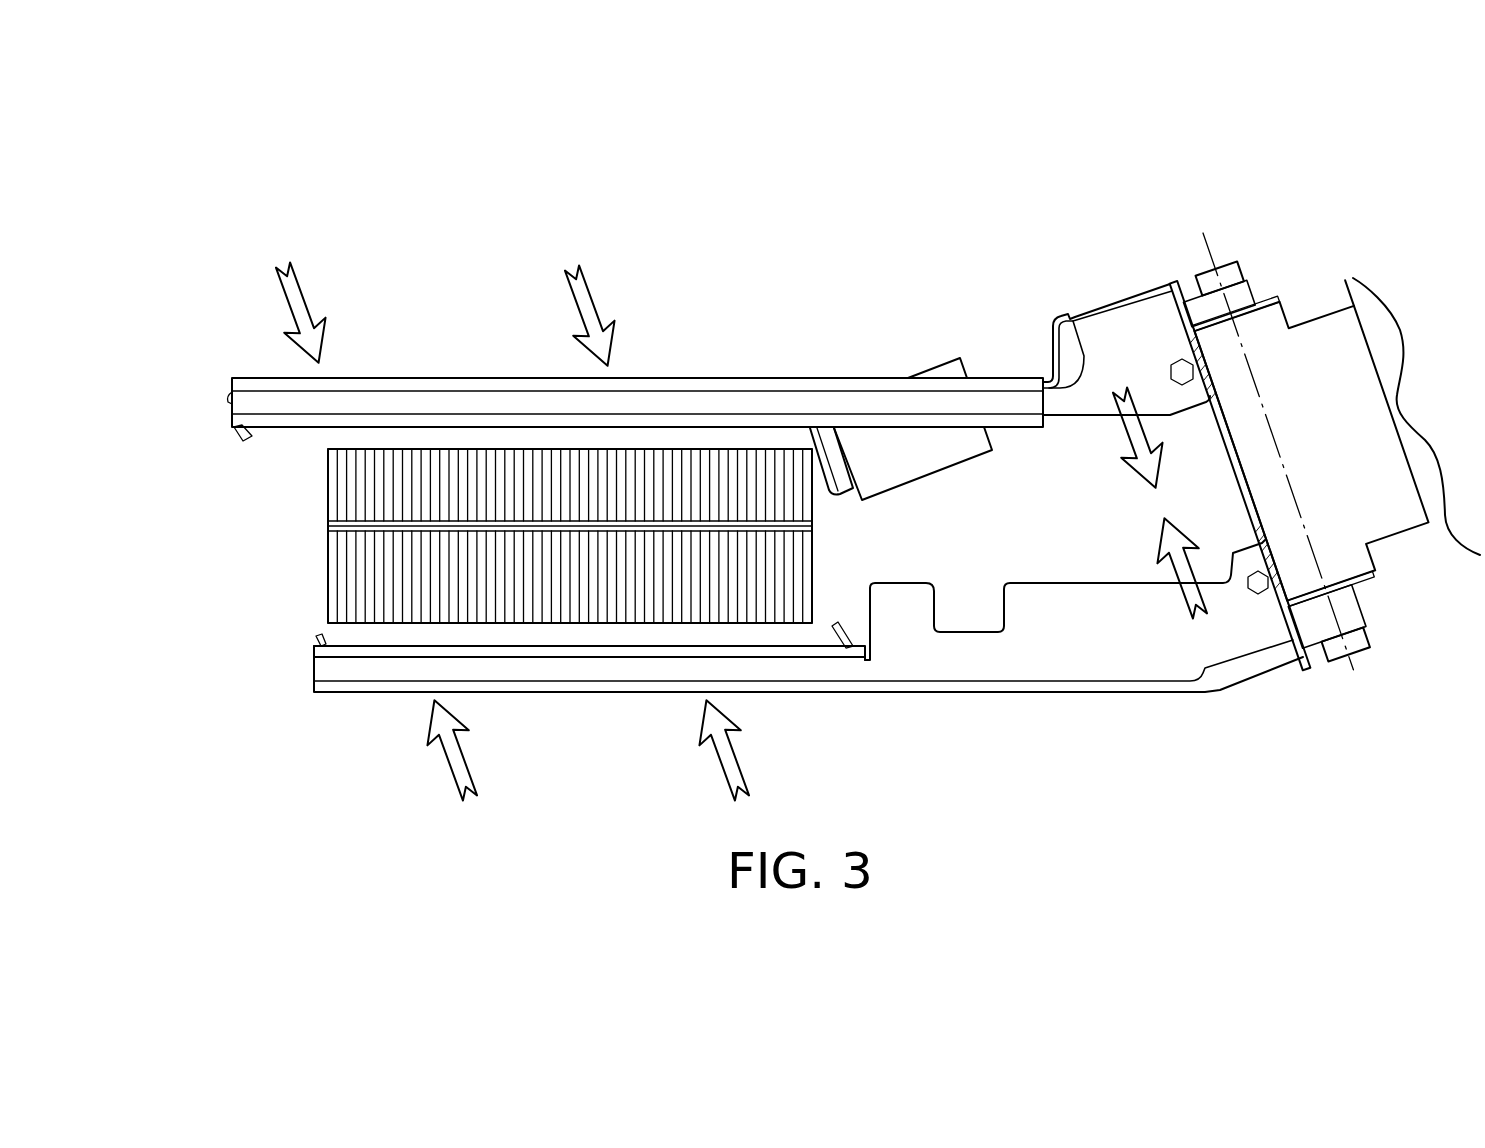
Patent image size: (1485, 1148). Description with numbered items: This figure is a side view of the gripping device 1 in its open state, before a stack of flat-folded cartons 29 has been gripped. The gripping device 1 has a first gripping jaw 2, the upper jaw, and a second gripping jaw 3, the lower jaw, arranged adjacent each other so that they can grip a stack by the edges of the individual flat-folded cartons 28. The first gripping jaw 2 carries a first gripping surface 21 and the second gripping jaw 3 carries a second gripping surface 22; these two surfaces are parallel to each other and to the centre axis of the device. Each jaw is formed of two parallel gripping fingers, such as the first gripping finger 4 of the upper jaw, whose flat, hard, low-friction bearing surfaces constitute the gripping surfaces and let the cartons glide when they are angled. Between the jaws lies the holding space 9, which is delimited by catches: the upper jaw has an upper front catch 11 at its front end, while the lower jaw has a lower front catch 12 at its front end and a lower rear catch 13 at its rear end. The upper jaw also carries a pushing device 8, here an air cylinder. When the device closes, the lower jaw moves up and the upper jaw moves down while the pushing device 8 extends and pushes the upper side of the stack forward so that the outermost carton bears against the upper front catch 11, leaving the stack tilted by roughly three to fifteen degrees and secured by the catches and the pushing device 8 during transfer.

The gripping device 1 is at (418, 197).
The first gripping jaw 2 is at (205, 398).
The second gripping jaw 3 is at (270, 670).
The first gripping finger 4 is at (433, 400).
The pushing device 8 is at (893, 450).
The holding space 9 is at (278, 540).
The upper front catch 11 is at (248, 443).
The lower front catch 12 is at (318, 640).
The lower rear catch 13 is at (842, 620).
The first gripping surface 21 is at (356, 428).
The second gripping surface 22 is at (387, 642).
The flat-folded carton 28 is at (328, 567).
The stack of flat-folded cartons 29 is at (270, 495).